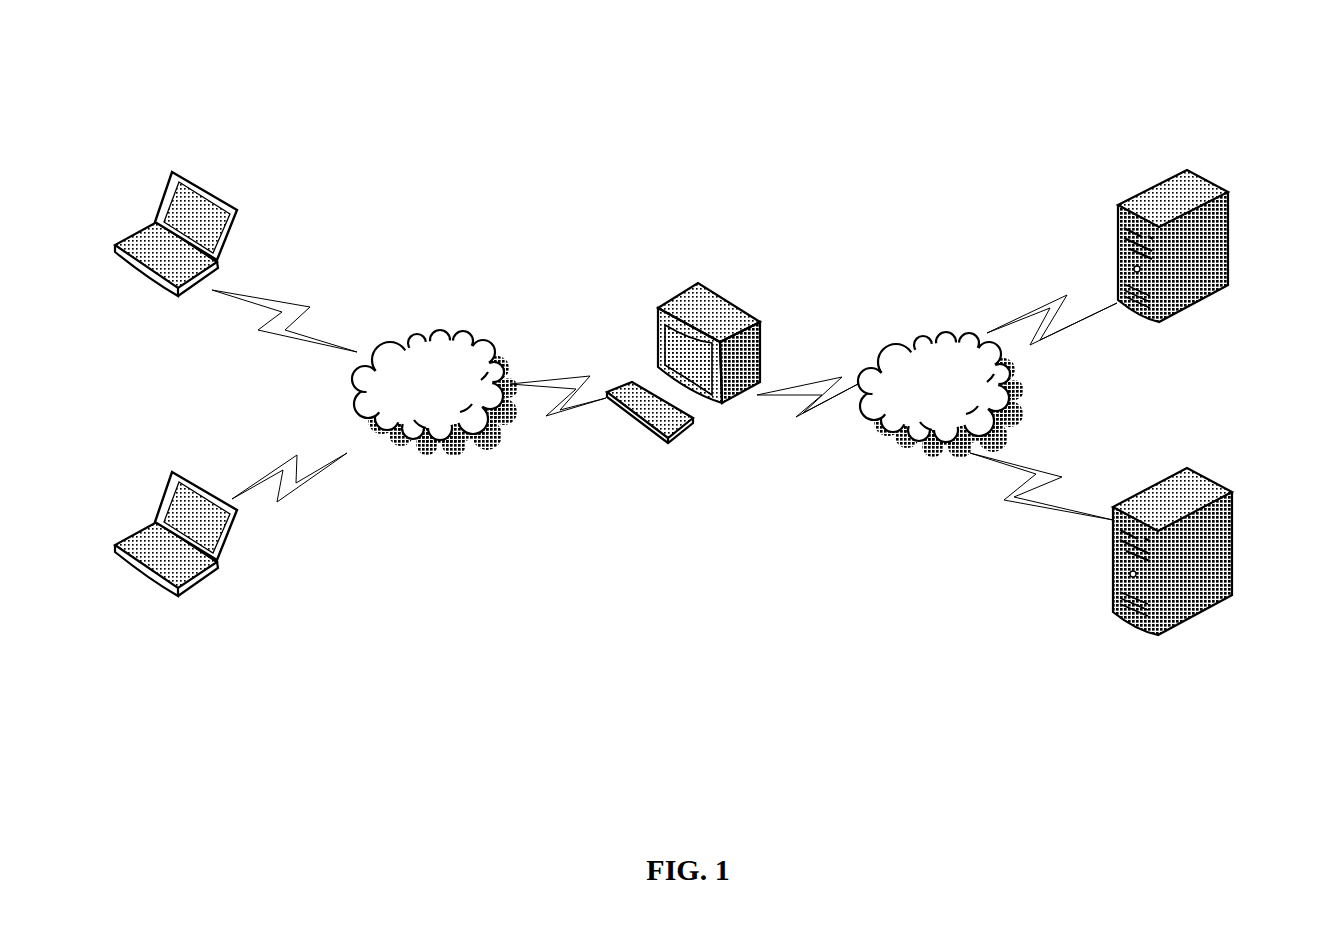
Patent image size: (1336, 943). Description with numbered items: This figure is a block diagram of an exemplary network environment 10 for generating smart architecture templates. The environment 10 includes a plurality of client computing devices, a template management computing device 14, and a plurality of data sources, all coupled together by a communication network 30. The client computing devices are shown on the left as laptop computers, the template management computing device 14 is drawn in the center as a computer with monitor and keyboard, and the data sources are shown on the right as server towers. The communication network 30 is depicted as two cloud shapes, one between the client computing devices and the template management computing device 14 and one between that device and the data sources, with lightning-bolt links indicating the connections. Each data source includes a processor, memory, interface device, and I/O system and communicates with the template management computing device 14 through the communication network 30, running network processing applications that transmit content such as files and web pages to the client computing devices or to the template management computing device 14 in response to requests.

The environment 10 is at (513, 92).
The template management computing device 14 is at (677, 288).
The communication network 30 is at (413, 390).